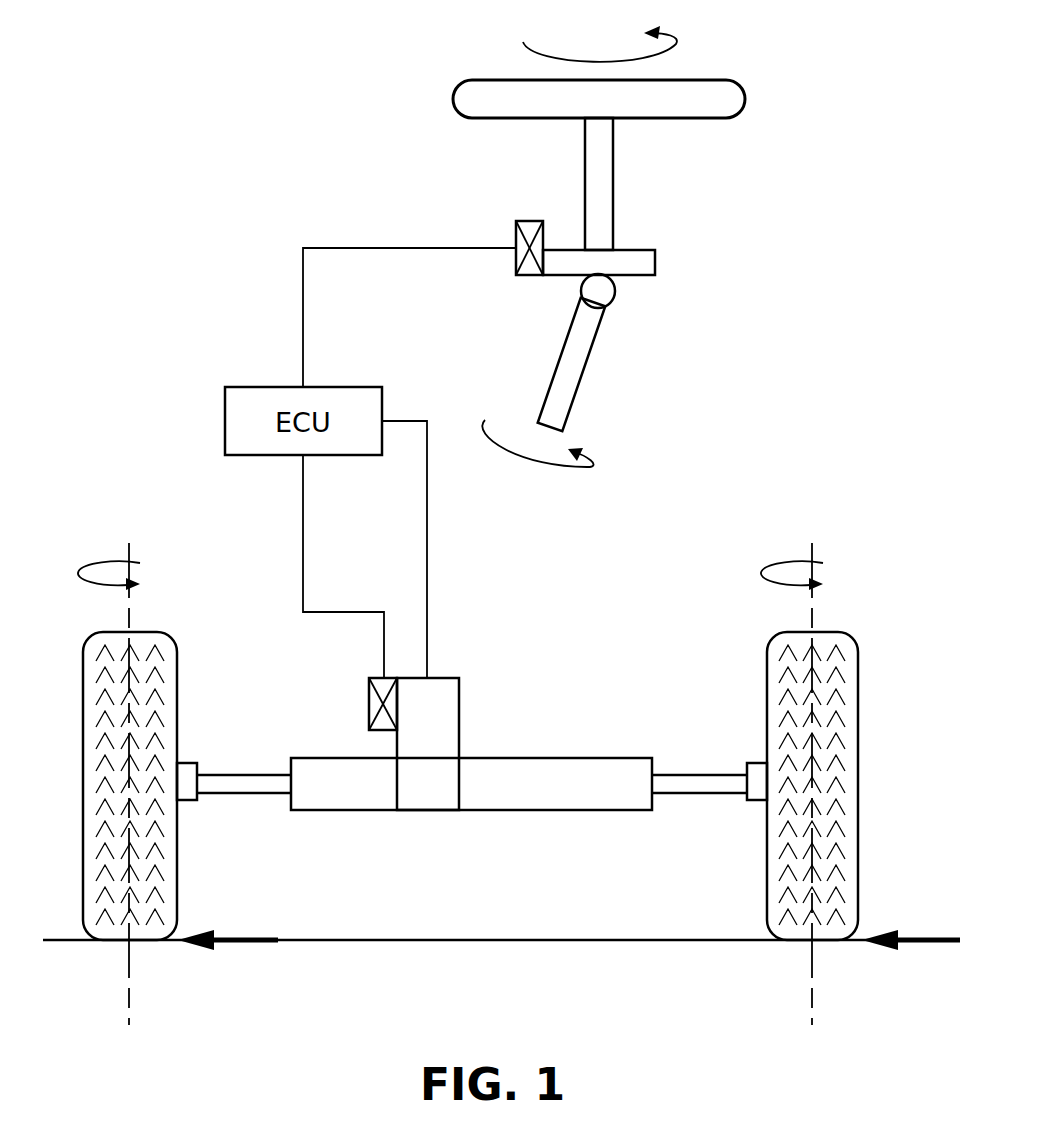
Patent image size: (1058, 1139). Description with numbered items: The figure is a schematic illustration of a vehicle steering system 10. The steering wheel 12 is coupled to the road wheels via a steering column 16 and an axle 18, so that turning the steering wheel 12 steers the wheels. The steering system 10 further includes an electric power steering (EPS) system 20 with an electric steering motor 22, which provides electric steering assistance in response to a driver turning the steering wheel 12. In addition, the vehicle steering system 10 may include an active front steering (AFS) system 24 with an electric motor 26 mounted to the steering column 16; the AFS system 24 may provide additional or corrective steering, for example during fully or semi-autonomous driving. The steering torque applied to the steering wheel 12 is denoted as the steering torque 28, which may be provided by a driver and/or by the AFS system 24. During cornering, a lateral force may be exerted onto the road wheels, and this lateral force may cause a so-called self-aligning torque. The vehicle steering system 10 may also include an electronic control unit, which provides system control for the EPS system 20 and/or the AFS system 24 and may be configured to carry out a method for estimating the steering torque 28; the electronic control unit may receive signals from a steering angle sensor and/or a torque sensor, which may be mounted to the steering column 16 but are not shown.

The vehicle steering system 10 is at (829, 216).
The steering wheel 12 is at (710, 88).
The steering column 16 is at (608, 200).
The axle 18 is at (578, 798).
The electric power steering (EPS) system 20 is at (521, 630).
The electric steering motor 22 is at (377, 677).
The active front steering (AFS) system 24 is at (663, 315).
The electric motor 26 is at (530, 222).
The steering torque 28 is at (530, 38).